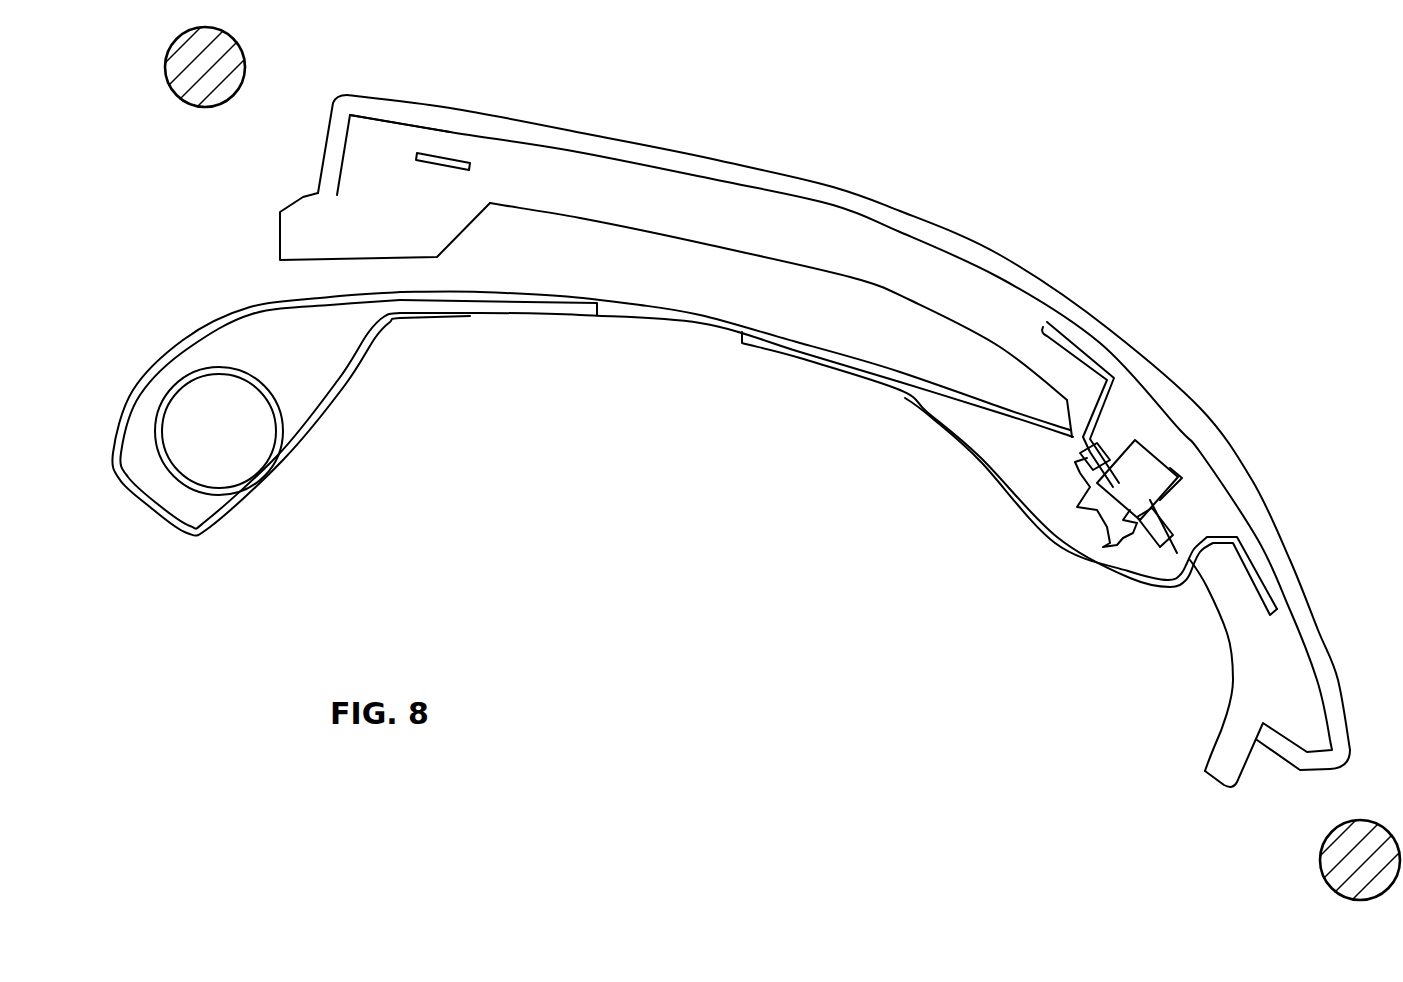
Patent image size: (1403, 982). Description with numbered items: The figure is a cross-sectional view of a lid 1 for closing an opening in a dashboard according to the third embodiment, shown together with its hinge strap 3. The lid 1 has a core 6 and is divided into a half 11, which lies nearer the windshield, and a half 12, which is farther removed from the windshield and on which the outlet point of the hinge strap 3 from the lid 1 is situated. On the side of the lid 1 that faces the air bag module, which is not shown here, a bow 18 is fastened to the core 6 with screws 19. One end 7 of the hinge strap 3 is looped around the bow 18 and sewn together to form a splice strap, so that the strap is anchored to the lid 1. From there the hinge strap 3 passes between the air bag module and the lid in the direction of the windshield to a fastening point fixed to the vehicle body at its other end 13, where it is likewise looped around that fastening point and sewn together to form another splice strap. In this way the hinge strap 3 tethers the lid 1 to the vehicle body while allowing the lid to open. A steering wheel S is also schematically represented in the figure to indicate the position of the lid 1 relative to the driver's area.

The lid 1 is at (975, 248).
The hinge strap 3 is at (670, 315).
The core 6 is at (872, 232).
The end of the hinge strap 7 is at (982, 482).
The half of the lid 11 is at (568, 127).
The half of the lid 12 is at (1252, 482).
The other end of the hinge strap 13 is at (337, 385).
The bow 18 is at (1075, 462).
The screws 19 is at (1160, 457).
The steering wheel S is at (191, 100).